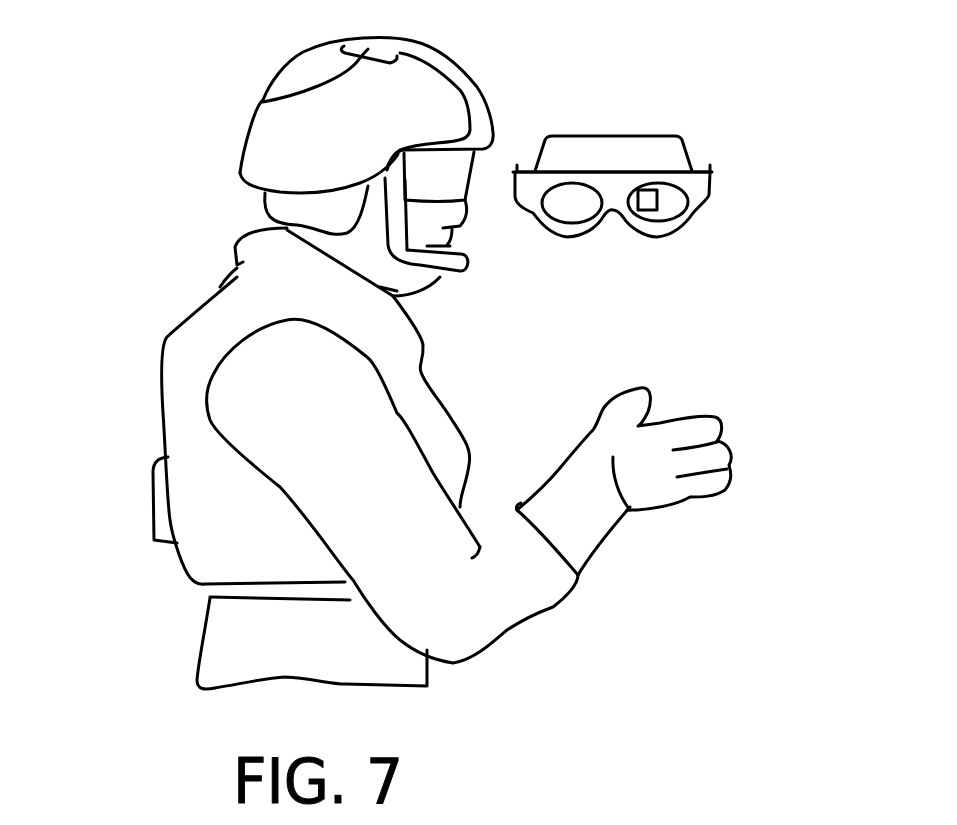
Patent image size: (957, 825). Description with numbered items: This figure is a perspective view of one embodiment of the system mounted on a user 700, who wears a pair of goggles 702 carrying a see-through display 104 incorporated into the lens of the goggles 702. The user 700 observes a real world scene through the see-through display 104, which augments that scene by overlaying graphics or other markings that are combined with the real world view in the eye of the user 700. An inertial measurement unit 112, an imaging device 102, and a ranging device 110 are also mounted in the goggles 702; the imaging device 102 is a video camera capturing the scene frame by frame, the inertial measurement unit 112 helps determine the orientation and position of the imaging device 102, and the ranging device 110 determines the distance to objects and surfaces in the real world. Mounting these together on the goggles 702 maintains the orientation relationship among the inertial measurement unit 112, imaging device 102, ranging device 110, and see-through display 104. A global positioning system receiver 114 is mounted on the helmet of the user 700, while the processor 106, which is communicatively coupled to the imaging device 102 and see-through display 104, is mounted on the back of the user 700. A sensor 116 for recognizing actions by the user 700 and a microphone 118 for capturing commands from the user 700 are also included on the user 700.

The user 700 is at (160, 344).
The goggles 702 is at (698, 153).
The imaging device 102 is at (654, 132).
The see-through display 104 is at (648, 212).
The processor 106 is at (153, 501).
The ranging device 110 is at (597, 130).
The inertial measurement unit 112 is at (568, 168).
The global positioning system receiver 114 is at (263, 102).
The sensor 116 is at (598, 513).
The microphone 118 is at (468, 267).